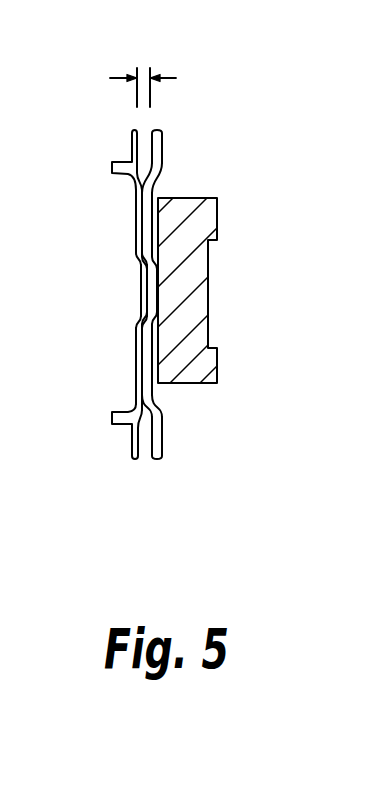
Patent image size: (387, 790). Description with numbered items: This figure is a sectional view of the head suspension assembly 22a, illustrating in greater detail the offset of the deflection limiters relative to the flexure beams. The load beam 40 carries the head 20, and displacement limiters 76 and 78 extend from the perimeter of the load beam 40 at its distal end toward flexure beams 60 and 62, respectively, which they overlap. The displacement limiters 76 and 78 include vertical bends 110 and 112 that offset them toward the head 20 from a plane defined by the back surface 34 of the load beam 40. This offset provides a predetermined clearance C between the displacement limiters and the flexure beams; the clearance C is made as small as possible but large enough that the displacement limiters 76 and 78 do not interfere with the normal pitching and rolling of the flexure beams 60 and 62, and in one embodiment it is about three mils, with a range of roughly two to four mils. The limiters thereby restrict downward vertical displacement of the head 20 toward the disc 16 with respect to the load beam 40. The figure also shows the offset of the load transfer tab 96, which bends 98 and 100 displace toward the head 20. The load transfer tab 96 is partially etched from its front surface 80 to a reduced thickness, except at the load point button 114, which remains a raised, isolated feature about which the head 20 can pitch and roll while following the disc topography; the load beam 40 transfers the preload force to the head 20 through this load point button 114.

The head suspension assembly 22a is at (253, 148).
The disc 16 is at (186, 281).
The load beam 40 is at (136, 197).
The head 20 is at (217, 201).
The flexure beam 60 is at (132, 143).
The flexure beam 62 is at (132, 441).
The displacement limiter 76 is at (163, 142).
The displacement limiter 78 is at (165, 426).
The vertical bend 110 is at (163, 176).
The vertical bend 112 is at (153, 397).
The bend 98 is at (134, 258).
The load transfer tab 96 is at (145, 282).
The bend 100 is at (146, 315).
The back surface 34 is at (137, 329).
The load point button 114 is at (152, 282).
The front surface 80 is at (150, 345).
The clearance C is at (172, 73).